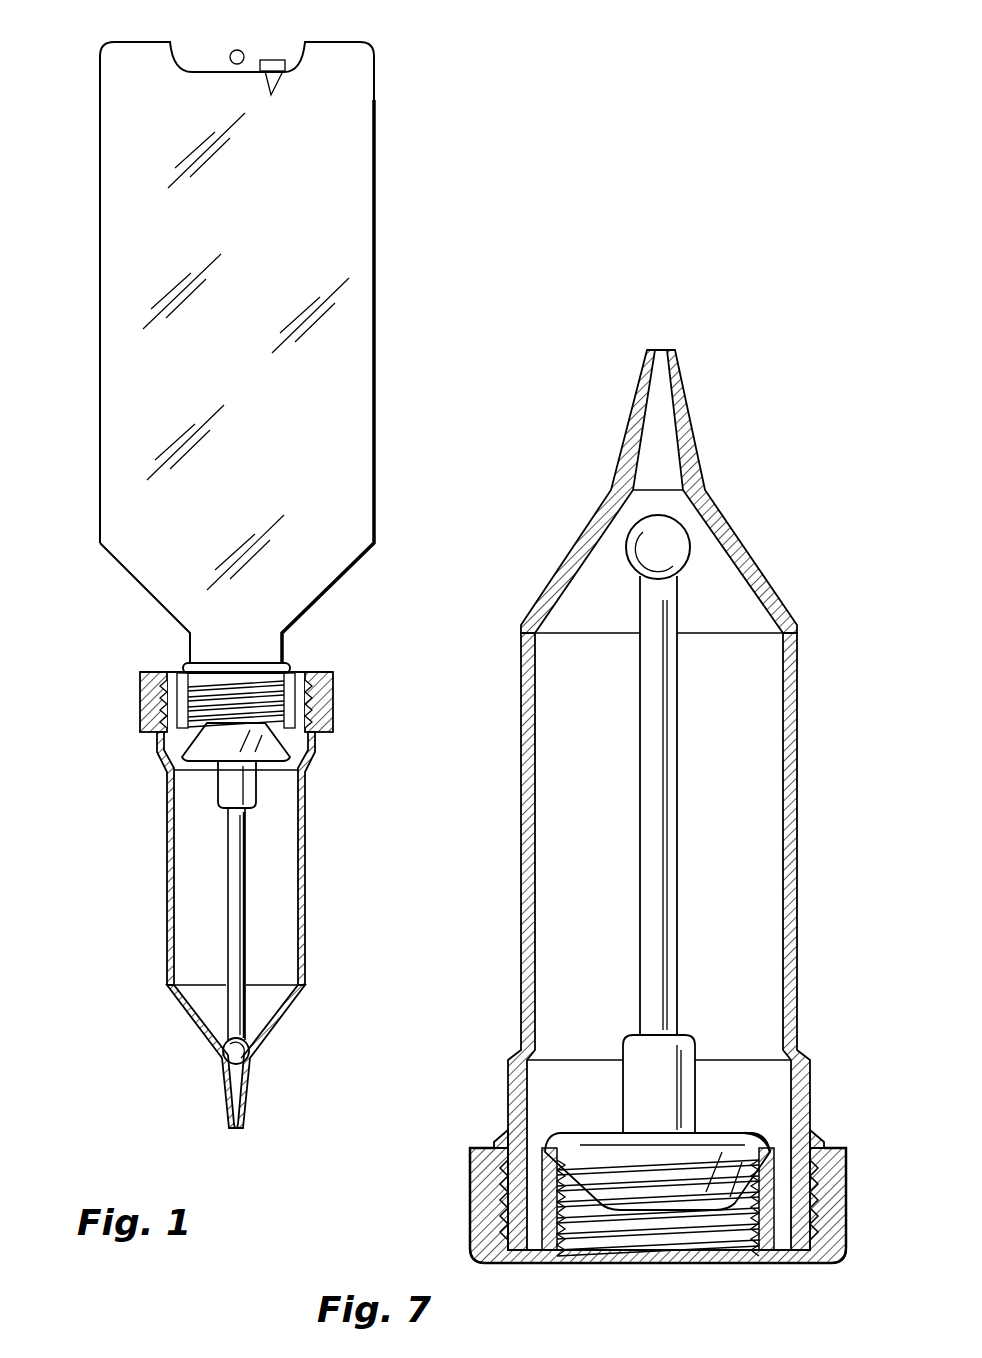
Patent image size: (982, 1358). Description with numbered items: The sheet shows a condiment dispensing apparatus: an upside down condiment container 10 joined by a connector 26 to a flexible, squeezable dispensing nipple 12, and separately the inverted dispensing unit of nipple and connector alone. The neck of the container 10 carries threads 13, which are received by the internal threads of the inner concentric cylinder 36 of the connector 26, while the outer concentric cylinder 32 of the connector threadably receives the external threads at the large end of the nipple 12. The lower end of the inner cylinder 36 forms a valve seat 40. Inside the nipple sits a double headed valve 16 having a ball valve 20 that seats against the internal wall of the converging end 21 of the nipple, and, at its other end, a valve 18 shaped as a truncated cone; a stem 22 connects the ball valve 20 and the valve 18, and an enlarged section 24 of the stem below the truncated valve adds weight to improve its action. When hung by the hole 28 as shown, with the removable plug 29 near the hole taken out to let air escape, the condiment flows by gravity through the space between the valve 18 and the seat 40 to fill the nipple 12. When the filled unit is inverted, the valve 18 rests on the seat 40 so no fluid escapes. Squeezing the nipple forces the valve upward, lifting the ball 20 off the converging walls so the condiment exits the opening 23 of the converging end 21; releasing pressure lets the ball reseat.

In FIG. 1, the condiment container 10 is at (380, 204).
In FIG. 1, the dispensing nipple 12 is at (165, 856).
In FIG. 7, the dispensing nipple 12 is at (519, 872).
In FIG. 1, the threads 13 is at (225, 692).
In FIG. 1, the double headed valve 16 is at (246, 925).
In FIG. 1, the valve 18 is at (200, 745).
In FIG. 7, the valve 18 is at (582, 1156).
In FIG. 1, the ball valve 20 is at (226, 1045).
In FIG. 7, the ball valve 20 is at (668, 528).
In FIG. 1, the converging end 21 is at (257, 1110).
In FIG. 7, the converging end 21 is at (694, 405).
In FIG. 1, the stem 22 is at (223, 890).
In FIG. 7, the stem 22 is at (648, 808).
In FIG. 1, the opening 23 is at (230, 1127).
In FIG. 7, the opening 23 is at (661, 350).
In FIG. 1, the enlarged section 24 is at (232, 785).
In FIG. 7, the enlarged section 24 is at (637, 1060).
In FIG. 1, the connector 26 is at (324, 672).
In FIG. 7, the connector 26 is at (838, 1146).
In FIG. 1, the hole 28 is at (232, 50).
In FIG. 1, the removable plug 29 is at (282, 60).
In FIG. 7, the outer concentric cylinder 32 is at (480, 1210).
In FIG. 7, the inner concentric cylinder 36 is at (551, 1230).
In FIG. 7, the valve seat 40 is at (762, 1148).